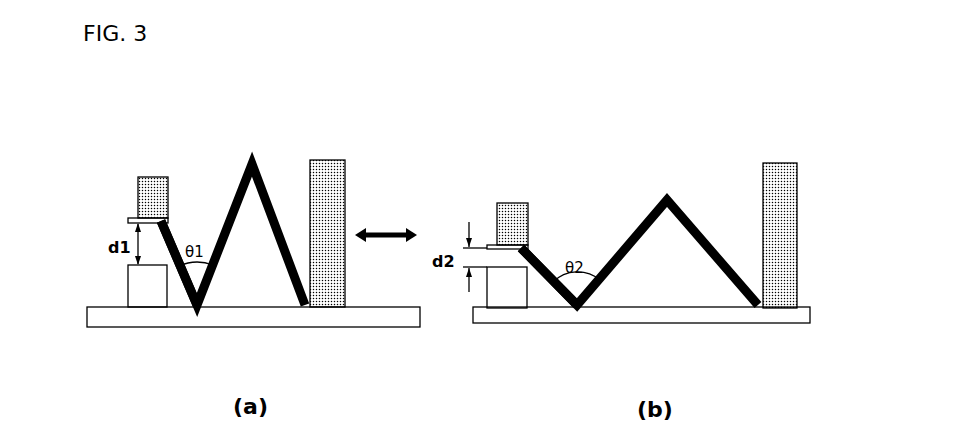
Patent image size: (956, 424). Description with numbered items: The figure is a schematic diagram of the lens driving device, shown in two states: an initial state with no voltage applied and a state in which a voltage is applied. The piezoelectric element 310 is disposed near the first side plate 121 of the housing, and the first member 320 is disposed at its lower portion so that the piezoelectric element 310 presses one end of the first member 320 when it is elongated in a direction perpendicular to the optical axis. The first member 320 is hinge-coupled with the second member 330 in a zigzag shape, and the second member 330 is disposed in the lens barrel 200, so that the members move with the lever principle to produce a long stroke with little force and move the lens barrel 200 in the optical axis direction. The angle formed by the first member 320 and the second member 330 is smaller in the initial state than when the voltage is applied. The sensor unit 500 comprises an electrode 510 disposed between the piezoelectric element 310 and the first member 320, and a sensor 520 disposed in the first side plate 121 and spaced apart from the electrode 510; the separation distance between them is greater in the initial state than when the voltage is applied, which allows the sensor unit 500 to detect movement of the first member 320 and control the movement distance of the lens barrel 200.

The first side plate 121 is at (390, 327).
The lens barrel 200 is at (337, 160).
The piezoelectric element 310 is at (147, 177).
The first member 320 is at (170, 233).
The second member 330 is at (246, 182).
The sensor unit 500 is at (267, 252).
The electrode 510 is at (128, 222).
The sensor 520 is at (296, 280).